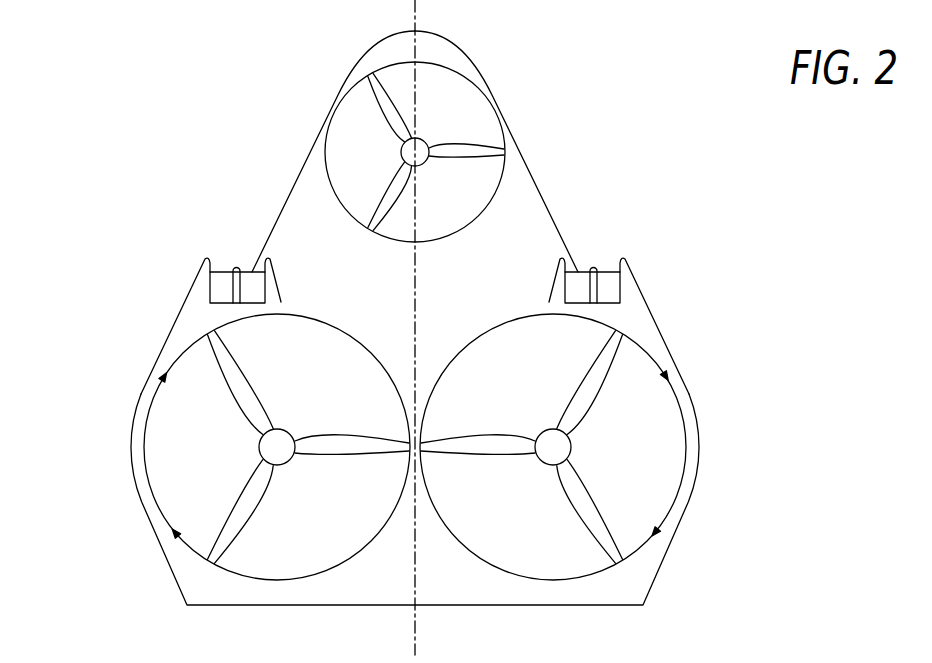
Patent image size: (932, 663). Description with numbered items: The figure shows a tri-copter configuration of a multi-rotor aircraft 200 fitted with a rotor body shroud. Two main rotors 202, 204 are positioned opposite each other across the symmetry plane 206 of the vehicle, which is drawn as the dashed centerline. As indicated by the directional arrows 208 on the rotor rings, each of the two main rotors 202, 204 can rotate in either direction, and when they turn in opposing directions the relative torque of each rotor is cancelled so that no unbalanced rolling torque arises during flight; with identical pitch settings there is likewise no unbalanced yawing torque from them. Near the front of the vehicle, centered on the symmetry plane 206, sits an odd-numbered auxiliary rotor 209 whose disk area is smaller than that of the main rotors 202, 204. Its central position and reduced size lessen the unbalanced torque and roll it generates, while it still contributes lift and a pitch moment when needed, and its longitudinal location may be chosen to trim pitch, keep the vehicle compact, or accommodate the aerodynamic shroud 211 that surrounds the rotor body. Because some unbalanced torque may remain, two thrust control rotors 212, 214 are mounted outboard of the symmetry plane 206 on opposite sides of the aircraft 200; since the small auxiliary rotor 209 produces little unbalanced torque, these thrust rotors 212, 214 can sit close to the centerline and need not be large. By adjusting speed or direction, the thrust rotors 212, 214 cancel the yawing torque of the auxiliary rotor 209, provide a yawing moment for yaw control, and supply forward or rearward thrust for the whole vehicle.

The multi-rotor aircraft 200 is at (168, 167).
The main rotor 202 is at (243, 485).
The main rotor 204 is at (602, 505).
The symmetry plane 206 is at (417, 12).
The directional arrows 208 is at (147, 410).
The auxiliary rotor 209 is at (387, 122).
The aerodynamic shroud 211 is at (174, 325).
The thrust control rotor 212 is at (257, 272).
The thrust control rotor 214 is at (564, 262).